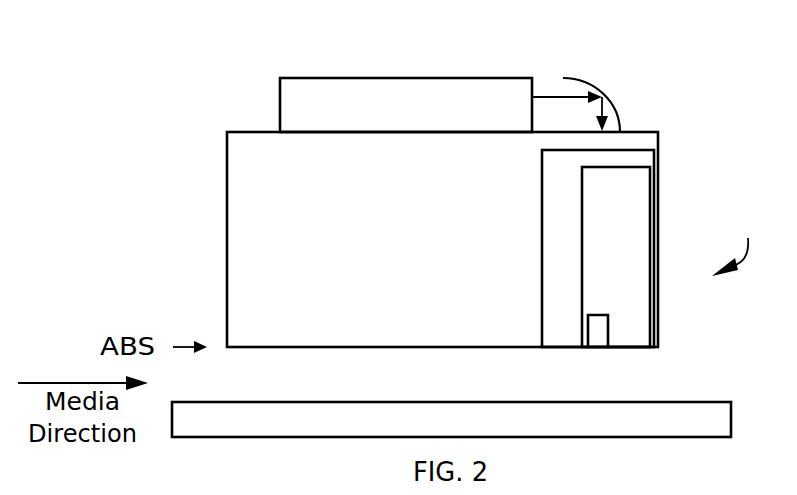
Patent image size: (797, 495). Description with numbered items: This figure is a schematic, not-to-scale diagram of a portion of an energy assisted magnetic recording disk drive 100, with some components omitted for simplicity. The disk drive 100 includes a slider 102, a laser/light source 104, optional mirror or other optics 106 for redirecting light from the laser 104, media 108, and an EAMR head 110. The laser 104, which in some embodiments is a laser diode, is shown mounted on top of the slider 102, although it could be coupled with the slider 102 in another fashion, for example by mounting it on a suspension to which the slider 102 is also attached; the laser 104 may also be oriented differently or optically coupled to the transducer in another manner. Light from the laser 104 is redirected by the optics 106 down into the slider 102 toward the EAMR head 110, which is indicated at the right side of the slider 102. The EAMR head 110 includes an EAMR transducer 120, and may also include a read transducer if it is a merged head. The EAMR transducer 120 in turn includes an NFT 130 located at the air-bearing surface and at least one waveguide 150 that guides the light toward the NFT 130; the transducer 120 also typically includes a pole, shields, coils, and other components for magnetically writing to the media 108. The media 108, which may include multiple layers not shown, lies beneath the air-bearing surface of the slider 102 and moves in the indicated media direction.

The EAMR disk drive 100 is at (475, 35).
The slider 102 is at (225, 167).
The laser/light source 104 is at (278, 113).
The mirror or other optics 106 is at (620, 115).
The media 108 is at (732, 418).
The EAMR head 110 is at (740, 241).
The EAMR transducer 120 is at (658, 222).
The NFT 130 is at (600, 350).
The waveguide 150 is at (620, 350).